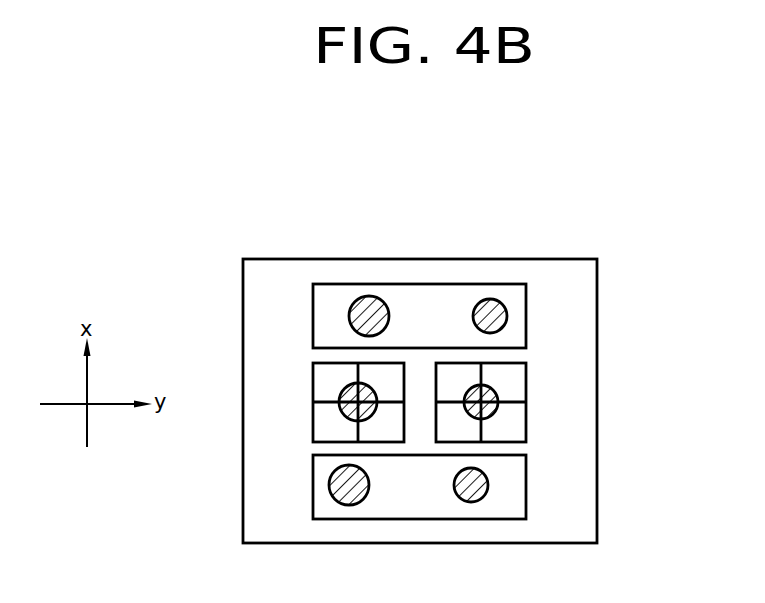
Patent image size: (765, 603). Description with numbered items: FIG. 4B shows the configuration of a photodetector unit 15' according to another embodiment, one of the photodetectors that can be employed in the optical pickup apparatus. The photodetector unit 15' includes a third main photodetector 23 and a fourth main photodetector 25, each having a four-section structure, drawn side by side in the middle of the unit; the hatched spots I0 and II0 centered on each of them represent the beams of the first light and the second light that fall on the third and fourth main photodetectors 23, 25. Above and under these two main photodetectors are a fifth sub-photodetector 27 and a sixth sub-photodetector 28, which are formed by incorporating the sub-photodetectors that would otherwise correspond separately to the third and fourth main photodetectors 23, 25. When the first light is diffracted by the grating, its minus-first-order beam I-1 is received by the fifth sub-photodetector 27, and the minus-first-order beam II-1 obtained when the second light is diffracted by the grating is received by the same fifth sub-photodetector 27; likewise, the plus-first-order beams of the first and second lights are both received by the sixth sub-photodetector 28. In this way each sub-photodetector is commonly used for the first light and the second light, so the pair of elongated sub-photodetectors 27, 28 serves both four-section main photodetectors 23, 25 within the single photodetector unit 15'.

The photodetector unit 15' is at (428, 346).
The third main photodetector 23 is at (323, 384).
The fourth main photodetector 25 is at (525, 387).
The fifth sub-photodetector 27 is at (422, 297).
The sixth sub-photodetector 28 is at (403, 507).
The zero order beam of first light I0 is at (355, 385).
The -1st order beam of first light I-1 is at (366, 296).
The -1st order beam of second light II-1 is at (487, 299).
The zero order beam of second light II0 is at (493, 388).